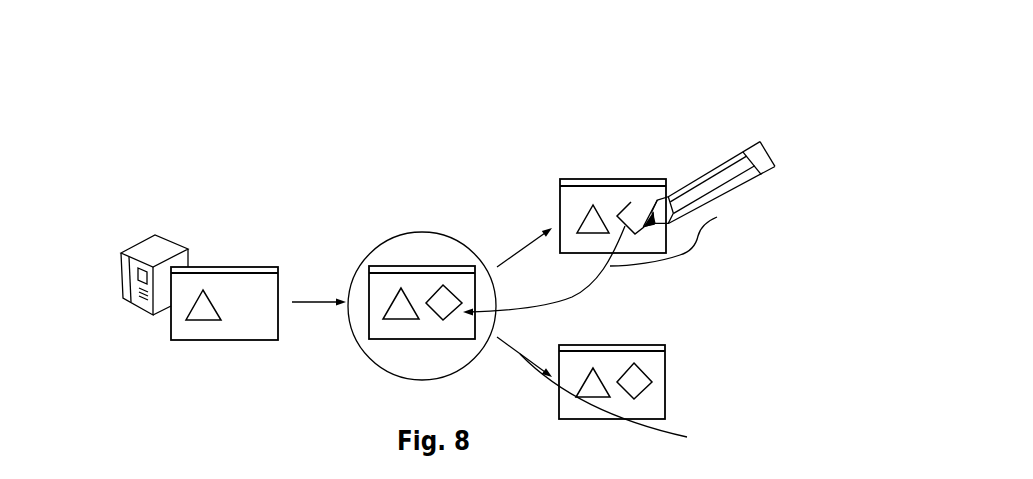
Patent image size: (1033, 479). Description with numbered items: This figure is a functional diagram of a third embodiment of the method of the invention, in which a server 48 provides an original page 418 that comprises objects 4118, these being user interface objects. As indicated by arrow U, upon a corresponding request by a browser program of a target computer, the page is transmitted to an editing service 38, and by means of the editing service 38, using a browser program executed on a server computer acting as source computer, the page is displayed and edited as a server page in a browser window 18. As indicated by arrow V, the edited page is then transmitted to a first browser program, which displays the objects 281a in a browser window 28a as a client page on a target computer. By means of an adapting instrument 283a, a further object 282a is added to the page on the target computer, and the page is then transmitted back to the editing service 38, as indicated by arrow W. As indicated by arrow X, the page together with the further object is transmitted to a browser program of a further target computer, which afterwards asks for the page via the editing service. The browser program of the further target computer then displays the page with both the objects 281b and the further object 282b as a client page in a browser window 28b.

The server 48 is at (150, 250).
The objects 4118 is at (203, 290).
The original page 418 is at (253, 288).
The arrow U is at (315, 302).
The editing service 38 is at (352, 288).
The browser window 18 is at (417, 250).
The arrow V is at (523, 243).
The browser window 28a is at (586, 158).
The objects 281a is at (595, 220).
The further object 282a is at (627, 203).
The adapting instrument 283a is at (723, 180).
The arrow W is at (717, 217).
The browser window 28b is at (684, 369).
The further object 282b is at (645, 377).
The objects 281b is at (597, 392).
The arrow X is at (687, 437).